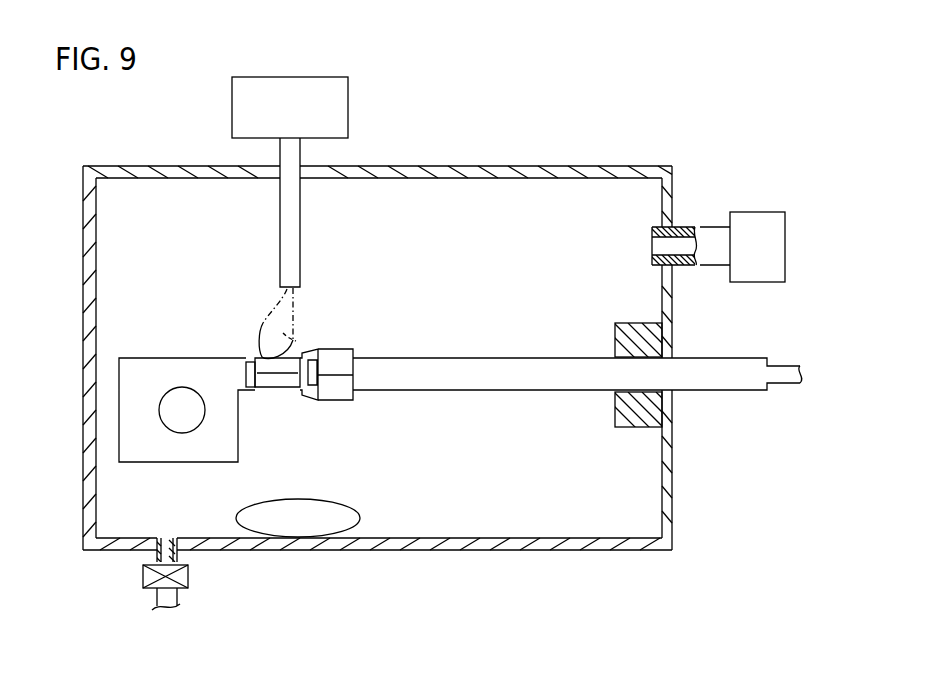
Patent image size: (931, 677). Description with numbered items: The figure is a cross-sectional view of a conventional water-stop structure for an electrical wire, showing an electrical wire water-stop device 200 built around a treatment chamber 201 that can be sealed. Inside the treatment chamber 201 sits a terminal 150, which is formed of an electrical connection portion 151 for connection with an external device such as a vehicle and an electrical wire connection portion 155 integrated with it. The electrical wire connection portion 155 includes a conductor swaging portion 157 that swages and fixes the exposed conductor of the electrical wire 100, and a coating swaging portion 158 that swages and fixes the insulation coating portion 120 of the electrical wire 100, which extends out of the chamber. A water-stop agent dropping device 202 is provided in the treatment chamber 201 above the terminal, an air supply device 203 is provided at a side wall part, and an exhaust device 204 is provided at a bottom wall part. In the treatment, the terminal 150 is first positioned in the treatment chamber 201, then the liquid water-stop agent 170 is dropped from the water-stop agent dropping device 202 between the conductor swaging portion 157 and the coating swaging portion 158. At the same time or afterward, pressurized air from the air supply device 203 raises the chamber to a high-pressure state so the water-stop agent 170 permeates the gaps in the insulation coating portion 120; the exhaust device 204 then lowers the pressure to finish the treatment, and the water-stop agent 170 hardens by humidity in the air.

The electrical wire 100 is at (248, 355).
The insulation coating portion 120 is at (425, 366).
The terminal 150 is at (259, 374).
The electrical connection portion 151 is at (160, 345).
The electrical wire connection portion 155 is at (269, 415).
The conductor swaging portion 157 is at (283, 386).
The coating swaging portion 158 is at (345, 400).
The water-stop agent 170 is at (296, 312).
The electrical wire water-stop device 200 is at (536, 136).
The treatment chamber 201 is at (424, 167).
The water-stop agent dropping device 202 is at (286, 90).
The air supply device 203 is at (752, 222).
The exhaust device 204 is at (143, 575).